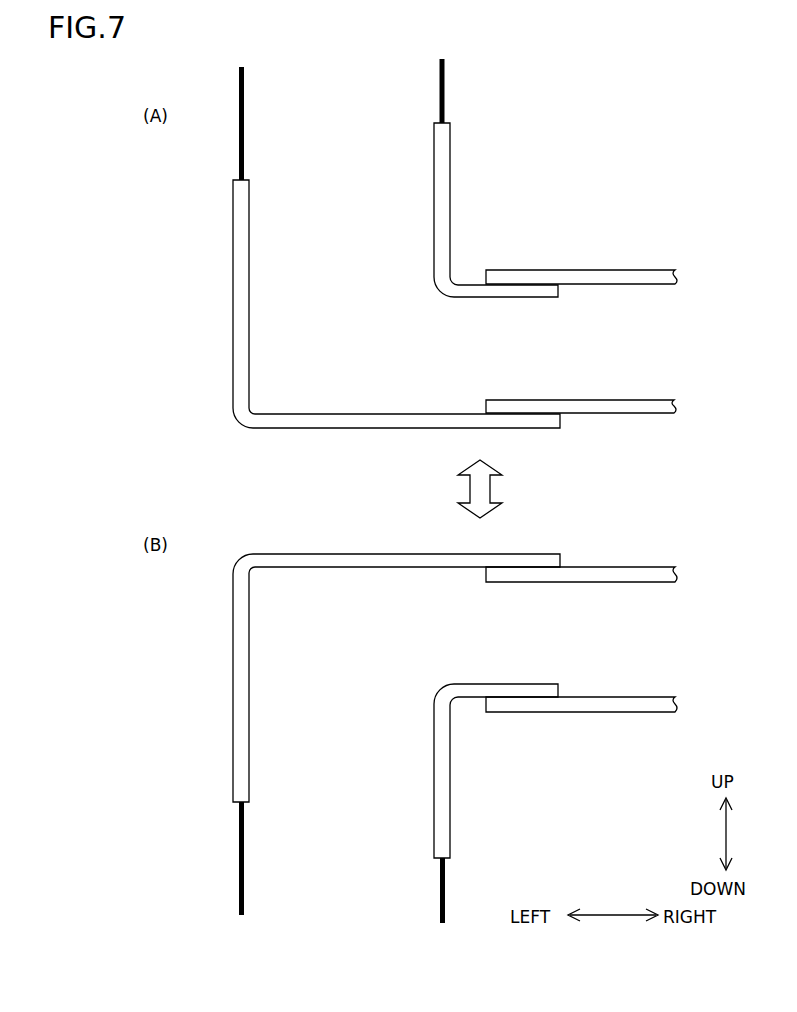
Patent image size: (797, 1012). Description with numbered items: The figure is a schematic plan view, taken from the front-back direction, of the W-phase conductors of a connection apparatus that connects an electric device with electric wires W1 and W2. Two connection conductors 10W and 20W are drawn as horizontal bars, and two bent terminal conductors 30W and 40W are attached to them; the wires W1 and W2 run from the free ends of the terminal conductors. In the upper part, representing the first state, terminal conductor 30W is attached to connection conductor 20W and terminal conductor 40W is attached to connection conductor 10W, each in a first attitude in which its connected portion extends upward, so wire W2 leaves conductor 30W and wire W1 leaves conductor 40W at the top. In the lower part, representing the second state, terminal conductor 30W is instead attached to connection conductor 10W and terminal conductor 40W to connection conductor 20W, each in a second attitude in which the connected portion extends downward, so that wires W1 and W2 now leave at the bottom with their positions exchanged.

The connection conductor 10W is at (620, 270).
The connection conductor 20W is at (615, 413).
The terminal conductor 30W is at (233, 303).
The terminal conductor 40W is at (450, 201).
The electric wire W1 is at (440, 90).
The electric wire W2 is at (240, 95).